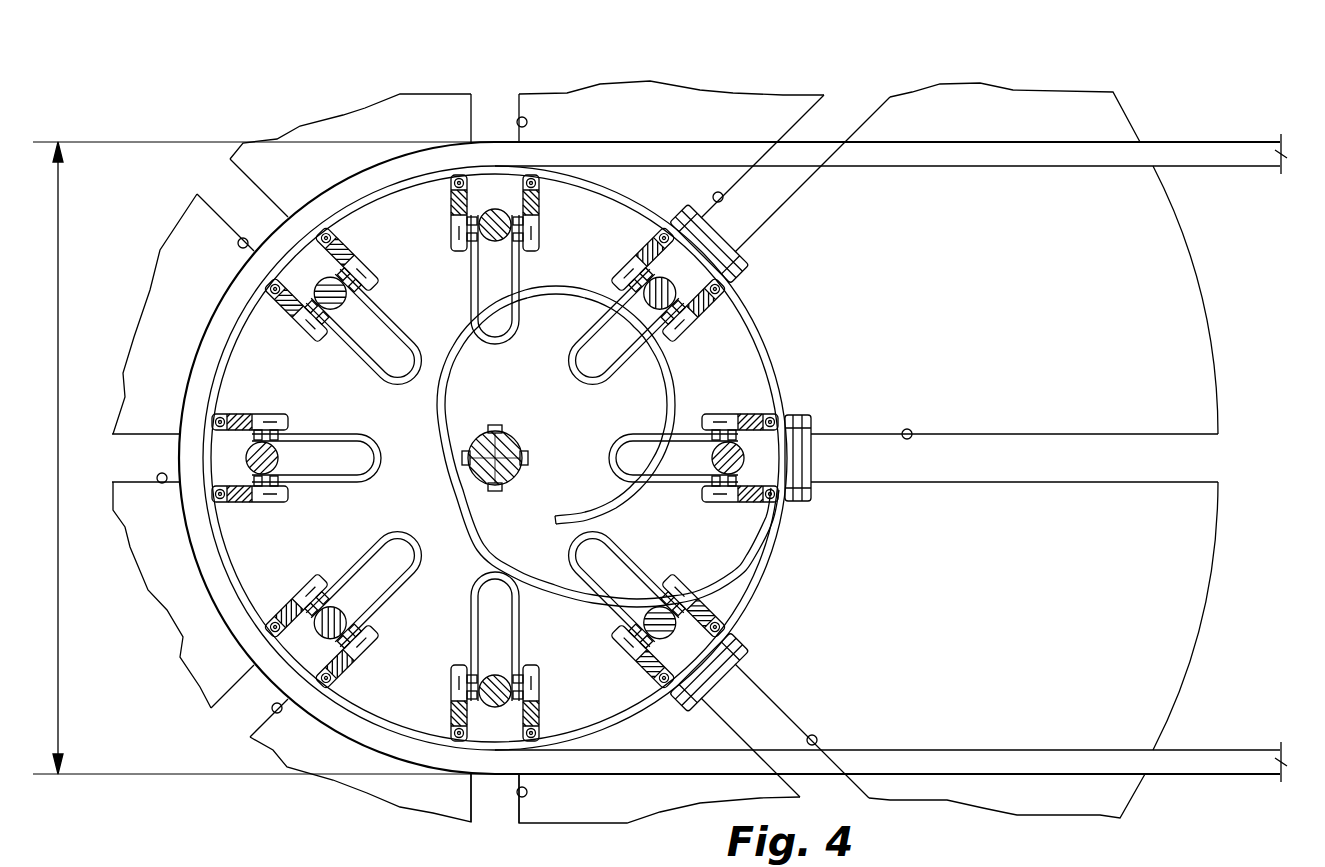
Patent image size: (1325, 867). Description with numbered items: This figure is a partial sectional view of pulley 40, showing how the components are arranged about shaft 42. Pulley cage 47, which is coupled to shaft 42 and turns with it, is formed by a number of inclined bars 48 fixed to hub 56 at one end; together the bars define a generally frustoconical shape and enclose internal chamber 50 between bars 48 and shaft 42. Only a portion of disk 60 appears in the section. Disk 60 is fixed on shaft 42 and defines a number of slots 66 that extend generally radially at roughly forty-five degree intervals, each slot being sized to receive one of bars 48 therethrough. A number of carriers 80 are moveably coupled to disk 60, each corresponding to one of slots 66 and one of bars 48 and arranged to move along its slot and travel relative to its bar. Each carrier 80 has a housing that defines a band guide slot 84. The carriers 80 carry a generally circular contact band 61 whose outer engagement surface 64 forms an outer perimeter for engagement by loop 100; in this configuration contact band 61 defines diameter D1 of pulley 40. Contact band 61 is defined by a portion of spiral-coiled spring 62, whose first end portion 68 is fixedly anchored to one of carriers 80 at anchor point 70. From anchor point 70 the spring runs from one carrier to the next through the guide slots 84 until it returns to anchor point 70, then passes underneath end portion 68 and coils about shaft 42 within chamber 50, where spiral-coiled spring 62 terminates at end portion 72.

The pulley 40 is at (1157, 72).
The shaft 42 is at (505, 437).
The pulley cage 47 is at (637, 577).
The inclined bars 48 is at (385, 345).
The internal chamber 50 is at (700, 393).
The hub 56 is at (477, 302).
The disk 60 is at (1218, 384).
The contact band 61 is at (757, 320).
The spiral-coiled spring 62 is at (773, 573).
The outer engagement surface 64 is at (760, 607).
The slots 66 is at (522, 122).
The first end portion 68 is at (812, 420).
The anchor point 70 is at (790, 397).
The end portion 72 is at (563, 513).
The carriers 80 is at (352, 244).
The band guide slot 84 is at (456, 140).
The loop 100 is at (1262, 162).
The diameter D1 is at (60, 238).